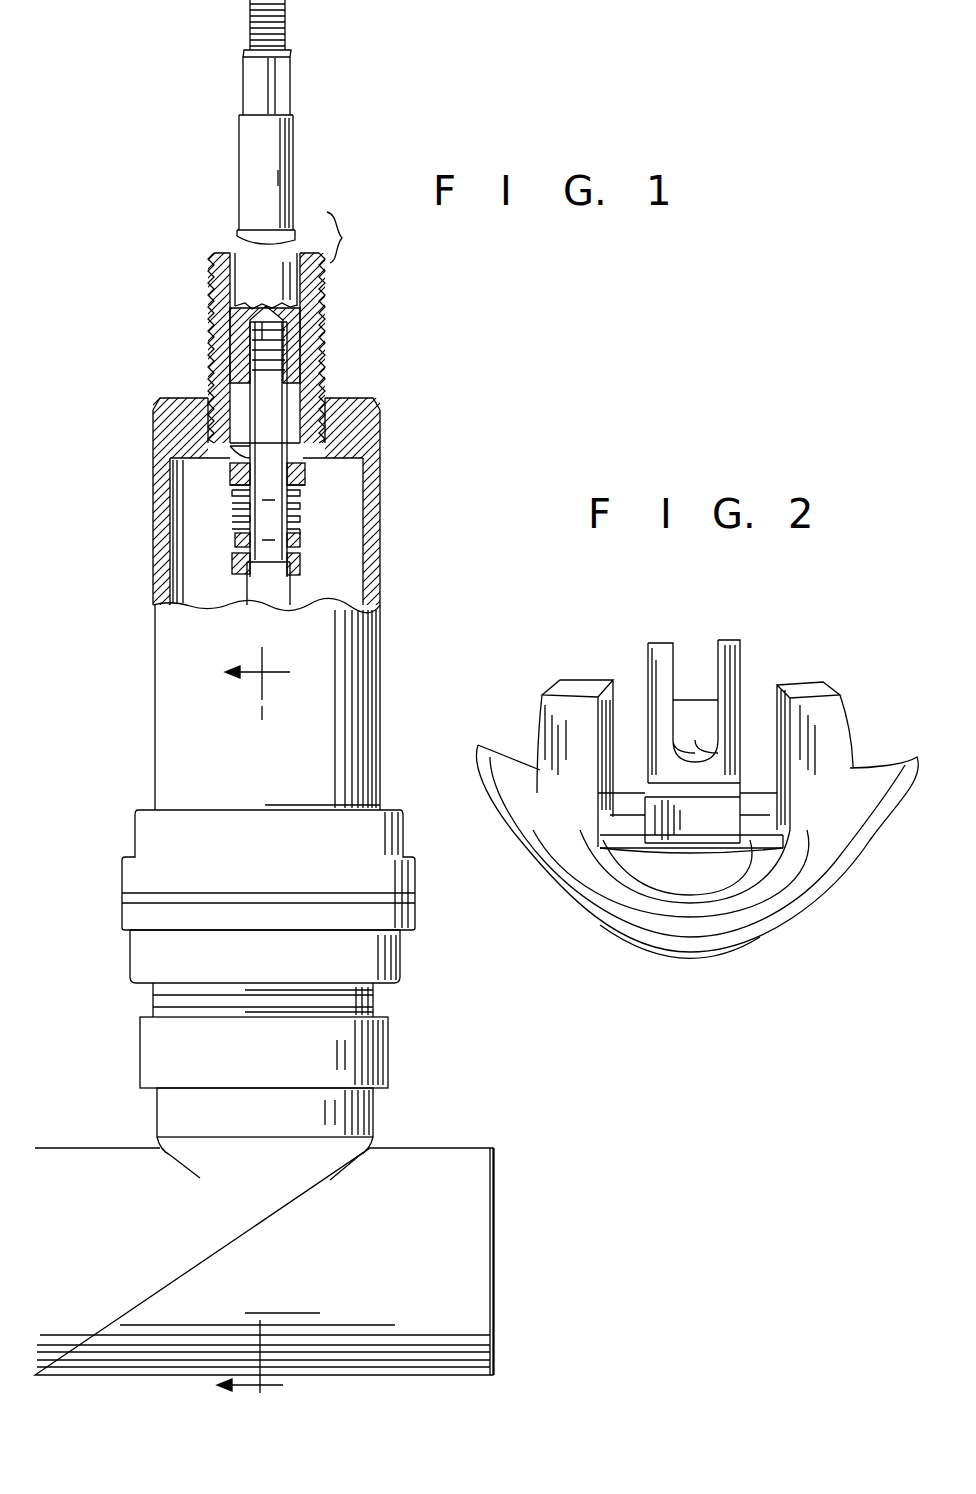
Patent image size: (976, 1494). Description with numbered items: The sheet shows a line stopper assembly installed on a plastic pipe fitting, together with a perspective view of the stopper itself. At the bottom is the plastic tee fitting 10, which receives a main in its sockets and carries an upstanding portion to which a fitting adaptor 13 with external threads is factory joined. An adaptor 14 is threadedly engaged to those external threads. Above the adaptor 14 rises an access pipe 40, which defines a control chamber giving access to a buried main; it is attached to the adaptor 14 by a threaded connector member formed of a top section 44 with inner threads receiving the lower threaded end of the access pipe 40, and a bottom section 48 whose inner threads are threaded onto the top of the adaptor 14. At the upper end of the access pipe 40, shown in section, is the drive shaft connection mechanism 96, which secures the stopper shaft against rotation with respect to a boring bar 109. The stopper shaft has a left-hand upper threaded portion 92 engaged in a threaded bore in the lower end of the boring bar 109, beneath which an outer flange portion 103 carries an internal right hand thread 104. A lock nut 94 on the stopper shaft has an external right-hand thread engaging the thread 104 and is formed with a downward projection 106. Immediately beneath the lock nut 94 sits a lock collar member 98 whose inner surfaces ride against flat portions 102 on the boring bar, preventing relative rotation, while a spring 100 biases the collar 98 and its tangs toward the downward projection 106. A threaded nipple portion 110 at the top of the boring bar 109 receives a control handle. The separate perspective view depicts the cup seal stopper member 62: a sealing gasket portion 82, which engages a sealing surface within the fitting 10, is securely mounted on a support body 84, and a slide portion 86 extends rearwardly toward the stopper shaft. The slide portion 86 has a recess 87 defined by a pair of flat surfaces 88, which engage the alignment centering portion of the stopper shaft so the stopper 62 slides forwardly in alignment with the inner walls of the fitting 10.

In FIG. 1, the fitting 10 is at (497, 1197).
In FIG. 1, the fitting adaptor 13 is at (375, 1117).
In FIG. 1, the adaptor 14 is at (392, 1053).
In FIG. 1, the access pipe 40 is at (382, 672).
In FIG. 1, the top section 44 is at (120, 873).
In FIG. 1, the bottom section 48 is at (128, 950).
In FIG. 1, the upper threaded portion 92 is at (283, 362).
In FIG. 1, the lock nut 94 is at (305, 463).
In FIG. 1, the drive shaft connection mechanism 96 is at (383, 507).
In FIG. 1, the lock collar member 98 is at (372, 505).
In FIG. 1, the spring 100 is at (293, 527).
In FIG. 1, the flat portions 102 is at (233, 557).
In FIG. 1, the outer flange portion 103 is at (287, 380).
In FIG. 1, the right hand thread 104 is at (225, 432).
In FIG. 1, the downward projection 106 is at (232, 455).
In FIG. 1, the boring bar 109 is at (295, 165).
In FIG. 1, the threaded nipple portion 110 is at (250, 31).
In FIG. 2, the cup seal stopper member 62 is at (683, 962).
In FIG. 2, the sealing gasket portion 82 is at (800, 880).
In FIG. 2, the support body 84 is at (815, 678).
In FIG. 2, the slide portion 86 is at (742, 660).
In FIG. 2, the recess 87 is at (695, 655).
In FIG. 2, the flat surfaces 88 is at (680, 640).